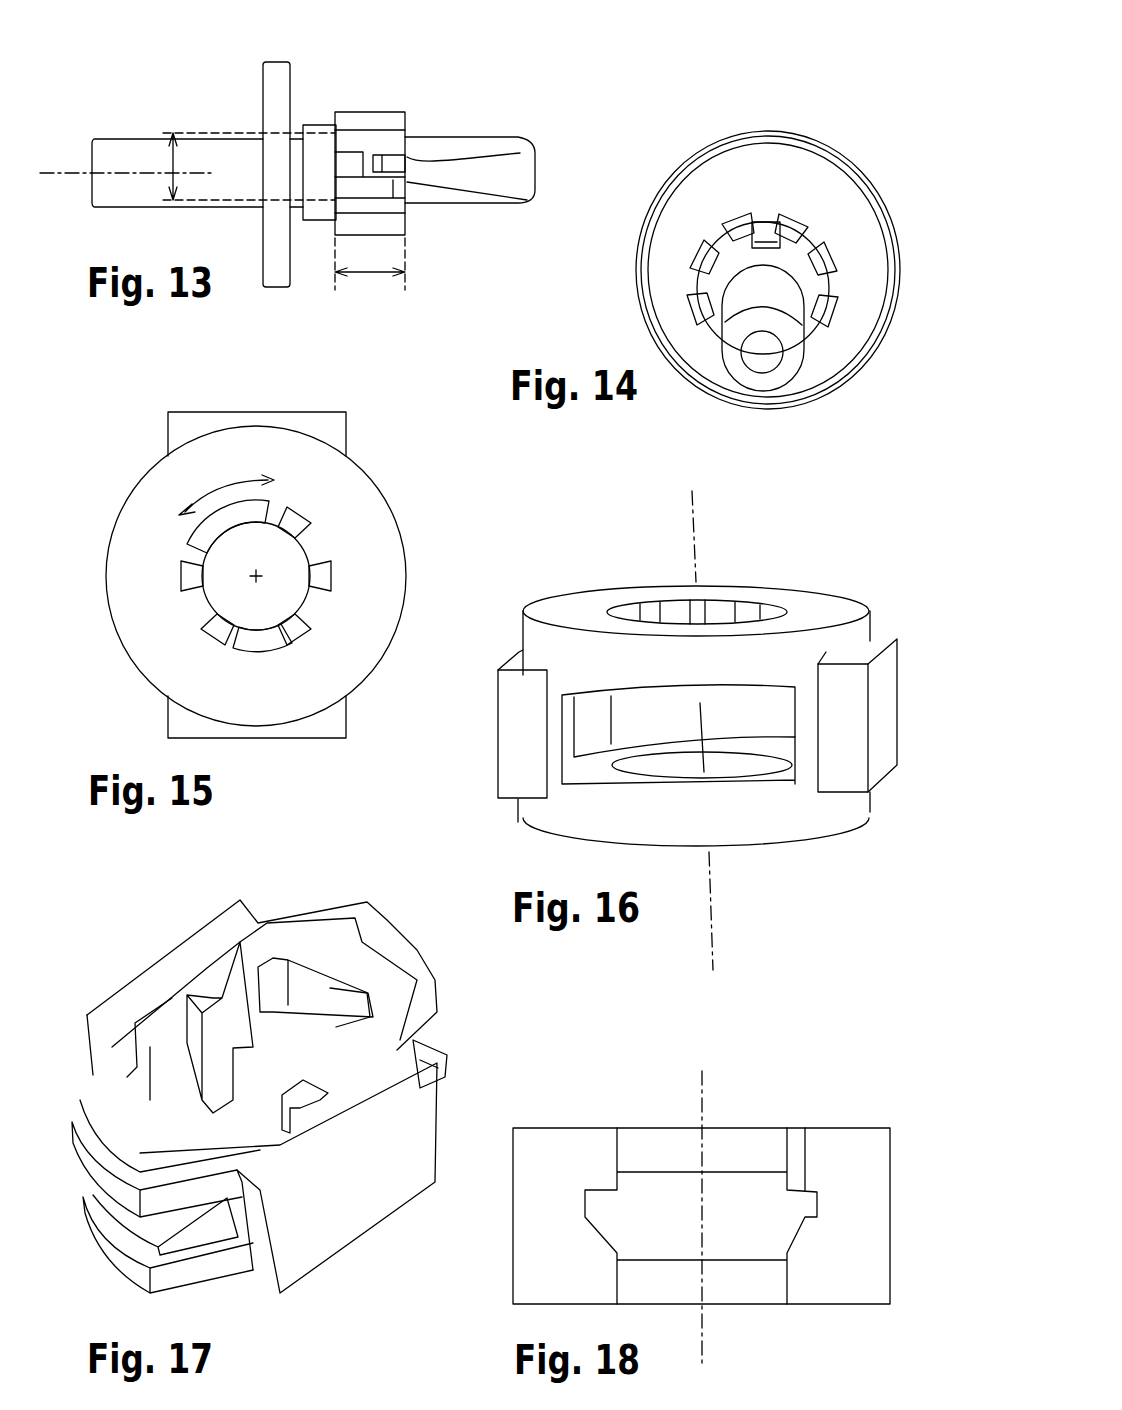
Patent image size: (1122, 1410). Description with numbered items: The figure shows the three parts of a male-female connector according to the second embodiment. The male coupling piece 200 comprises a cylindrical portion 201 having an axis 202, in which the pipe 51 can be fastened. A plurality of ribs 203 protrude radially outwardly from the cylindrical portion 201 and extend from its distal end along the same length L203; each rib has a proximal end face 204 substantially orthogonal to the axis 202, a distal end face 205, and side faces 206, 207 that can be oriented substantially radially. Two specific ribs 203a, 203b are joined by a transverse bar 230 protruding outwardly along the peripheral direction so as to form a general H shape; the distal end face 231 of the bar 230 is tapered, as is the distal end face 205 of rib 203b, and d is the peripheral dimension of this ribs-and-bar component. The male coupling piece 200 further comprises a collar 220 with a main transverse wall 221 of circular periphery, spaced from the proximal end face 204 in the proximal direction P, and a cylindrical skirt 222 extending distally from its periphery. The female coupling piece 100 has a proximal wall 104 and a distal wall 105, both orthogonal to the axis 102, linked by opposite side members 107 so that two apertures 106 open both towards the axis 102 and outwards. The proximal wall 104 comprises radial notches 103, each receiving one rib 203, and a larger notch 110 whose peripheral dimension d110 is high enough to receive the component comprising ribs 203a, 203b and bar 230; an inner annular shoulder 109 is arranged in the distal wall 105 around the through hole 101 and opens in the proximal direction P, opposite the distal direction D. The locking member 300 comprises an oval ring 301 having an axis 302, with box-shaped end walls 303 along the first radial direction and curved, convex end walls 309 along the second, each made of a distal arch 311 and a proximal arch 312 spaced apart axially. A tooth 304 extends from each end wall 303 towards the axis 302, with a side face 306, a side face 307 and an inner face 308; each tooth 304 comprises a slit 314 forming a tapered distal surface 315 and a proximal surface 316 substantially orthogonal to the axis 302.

In FIG. 13, the pipe 51 is at (130, 193).
In FIG. 15, the female coupling piece 100 is at (82, 430).
In FIG. 16, the female coupling piece 100 is at (856, 555).
In FIG. 15, the through hole 101 is at (233, 552).
In FIG. 15, the axis 102 is at (256, 576).
In FIG. 16, the axis 102 is at (713, 939).
In FIG. 15, the radial notches 103 is at (305, 526).
In FIG. 16, the radial notches 103 is at (704, 596).
In FIG. 15, the proximal wall 104 is at (381, 600).
In FIG. 16, the proximal wall 104 is at (574, 617).
In FIG. 15, the distal wall 105 is at (296, 628).
In FIG. 16, the distal wall 105 is at (585, 821).
In FIG. 16, the apertures 106 is at (766, 708).
In FIG. 15, the side members 107 is at (324, 425).
In FIG. 16, the side members 107 is at (882, 703).
In FIG. 16, the inner annular shoulder 109 is at (642, 767).
In FIG. 15, the larger notch 110 is at (212, 556).
In FIG. 16, the larger notch 110 is at (773, 598).
In FIG. 13, the male coupling piece 200 is at (430, 78).
In FIG. 14, the male coupling piece 200 is at (896, 366).
In FIG. 13, the cylindrical portion 201 is at (307, 125).
In FIG. 14, the cylindrical portion 201 is at (813, 303).
In FIG. 13, the axis 202 is at (50, 173).
In FIG. 13, the ribs 203 is at (422, 167).
In FIG. 14, the ribs 203 is at (756, 263).
In FIG. 13, the specific rib 203a is at (397, 143).
In FIG. 14, the specific rib 203a is at (790, 227).
In FIG. 13, the specific rib 203b is at (377, 192).
In FIG. 14, the specific rib 203b is at (737, 223).
In FIG. 13, the proximal end face 204 is at (323, 113).
In FIG. 13, the distal end face 205 is at (400, 118).
In FIG. 14, the distal end face 205 is at (747, 250).
In FIG. 14, the side face 206 is at (703, 308).
In FIG. 14, the side face 207 is at (712, 245).
In FIG. 13, the collar 220 is at (283, 62).
In FIG. 14, the collar 220 is at (692, 138).
In FIG. 14, the main transverse wall 221 is at (680, 232).
In FIG. 14, the cylindrical skirt 222 is at (670, 355).
In FIG. 13, the transverse bar 230 is at (363, 163).
In FIG. 14, the transverse bar 230 is at (767, 223).
In FIG. 13, the distal end face 231 is at (500, 158).
In FIG. 14, the distal end face 231 is at (800, 222).
In FIG. 17, the locking member 300 is at (60, 988).
In FIG. 18, the locking member 300 is at (855, 1062).
In FIG. 17, the ring 301 is at (63, 1085).
In FIG. 18, the axis 302 is at (702, 1345).
In FIG. 17, the end walls 303 is at (109, 1012).
In FIG. 18, the end walls 303 is at (858, 1198).
In FIG. 17, the tooth 304 is at (316, 1244).
In FIG. 18, the tooth 304 is at (599, 1171).
In FIG. 17, the side face 306 is at (198, 1088).
In FIG. 18, the side face 306 is at (597, 1243).
In FIG. 18, the side face 307 is at (807, 1243).
In FIG. 17, the inner face 308 is at (213, 1016).
In FIG. 18, the inner face 308 is at (785, 1181).
In FIG. 17, the end walls 309 is at (85, 1268).
In FIG. 17, the distal arch 311 is at (387, 925).
In FIG. 17, the proximal arch 312 is at (172, 1277).
In FIG. 17, the slit 314 is at (237, 903).
In FIG. 18, the slit 314 is at (795, 1210).
In FIG. 17, the distal surface 315 is at (211, 1096).
In FIG. 18, the distal surface 315 is at (787, 1233).
In FIG. 17, the proximal surface 316 is at (185, 1040).
In FIG. 18, the proximal surface 316 is at (802, 1200).
In FIG. 13, the peripheral dimension d is at (163, 167).
In FIG. 13, the length L203 is at (370, 273).
In FIG. 15, the peripheral dimension d110 is at (226, 482).
In FIG. 13, the proximal direction P is at (152, 75).
In FIG. 16, the proximal direction P is at (909, 548).
In FIG. 18, the proximal direction P is at (921, 1065).
In FIG. 13, the distal direction D is at (570, 75).
In FIG. 16, the distal direction D is at (923, 827).
In FIG. 18, the distal direction D is at (921, 1322).